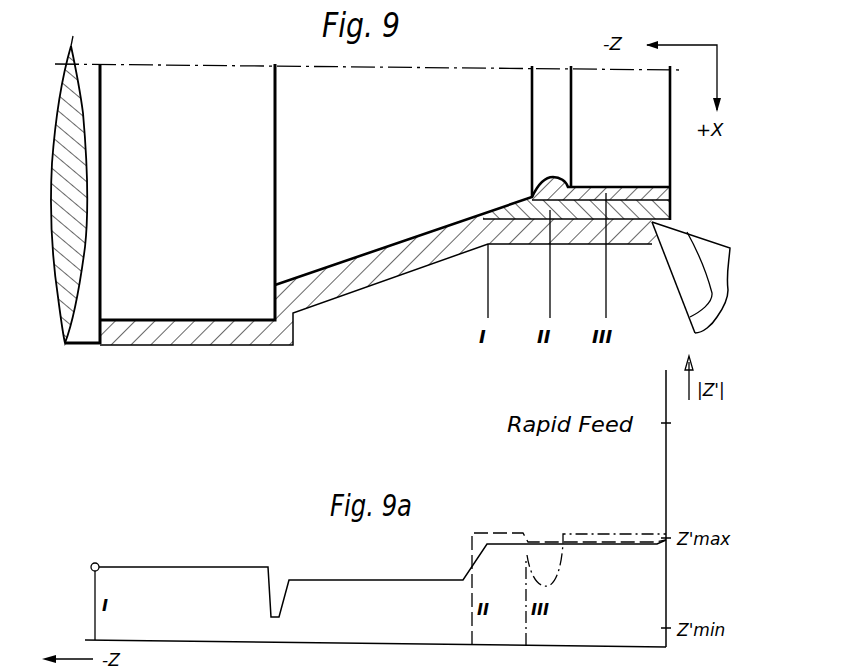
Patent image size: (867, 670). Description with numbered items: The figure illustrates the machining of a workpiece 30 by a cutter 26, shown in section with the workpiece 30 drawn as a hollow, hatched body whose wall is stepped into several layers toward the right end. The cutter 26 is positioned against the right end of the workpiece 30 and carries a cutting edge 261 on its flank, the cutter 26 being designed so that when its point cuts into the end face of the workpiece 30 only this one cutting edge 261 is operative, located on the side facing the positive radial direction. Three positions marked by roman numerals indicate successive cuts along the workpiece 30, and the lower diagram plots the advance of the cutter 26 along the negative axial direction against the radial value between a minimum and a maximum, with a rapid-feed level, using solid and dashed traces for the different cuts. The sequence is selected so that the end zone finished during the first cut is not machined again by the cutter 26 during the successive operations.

The workpiece 30 is at (155, 310).
The cutter 26 is at (670, 262).
The cutting edge 261 is at (666, 289).